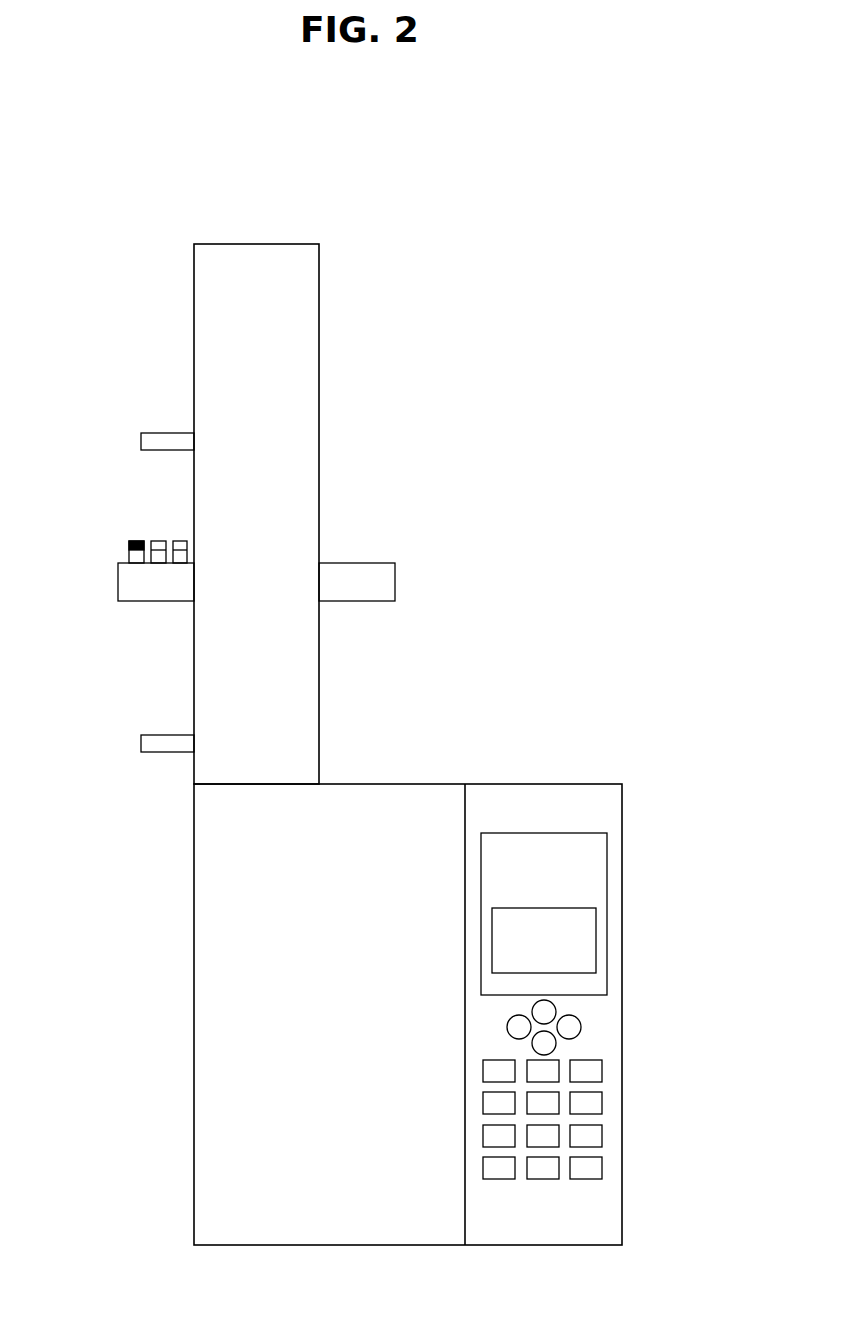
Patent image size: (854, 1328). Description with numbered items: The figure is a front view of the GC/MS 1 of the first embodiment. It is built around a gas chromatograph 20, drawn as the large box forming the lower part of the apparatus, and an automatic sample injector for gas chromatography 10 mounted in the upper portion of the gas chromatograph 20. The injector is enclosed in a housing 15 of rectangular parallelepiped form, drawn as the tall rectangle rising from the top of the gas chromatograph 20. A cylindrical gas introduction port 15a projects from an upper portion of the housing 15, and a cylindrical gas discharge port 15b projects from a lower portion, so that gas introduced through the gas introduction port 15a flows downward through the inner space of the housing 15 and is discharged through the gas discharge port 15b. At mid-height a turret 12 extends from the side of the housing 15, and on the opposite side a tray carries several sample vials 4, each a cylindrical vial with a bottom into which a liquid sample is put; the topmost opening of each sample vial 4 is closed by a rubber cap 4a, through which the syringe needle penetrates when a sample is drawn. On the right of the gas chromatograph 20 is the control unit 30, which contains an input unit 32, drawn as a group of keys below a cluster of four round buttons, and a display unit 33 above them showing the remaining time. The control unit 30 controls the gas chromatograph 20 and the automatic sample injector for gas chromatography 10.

The GC/MS 1 is at (253, 207).
The automatic sample injector for gas chromatography 10 is at (362, 444).
The housing 15 is at (303, 308).
The gas introduction port 15a is at (141, 441).
The gas discharge port 15b is at (141, 743).
The turret 12 is at (395, 578).
The sample vial 4 is at (125, 559).
The cap 4a is at (131, 541).
The gas chromatograph 20 is at (233, 1017).
The control unit 30 is at (670, 918).
The display unit 33 is at (575, 939).
The input unit 32 is at (578, 1072).